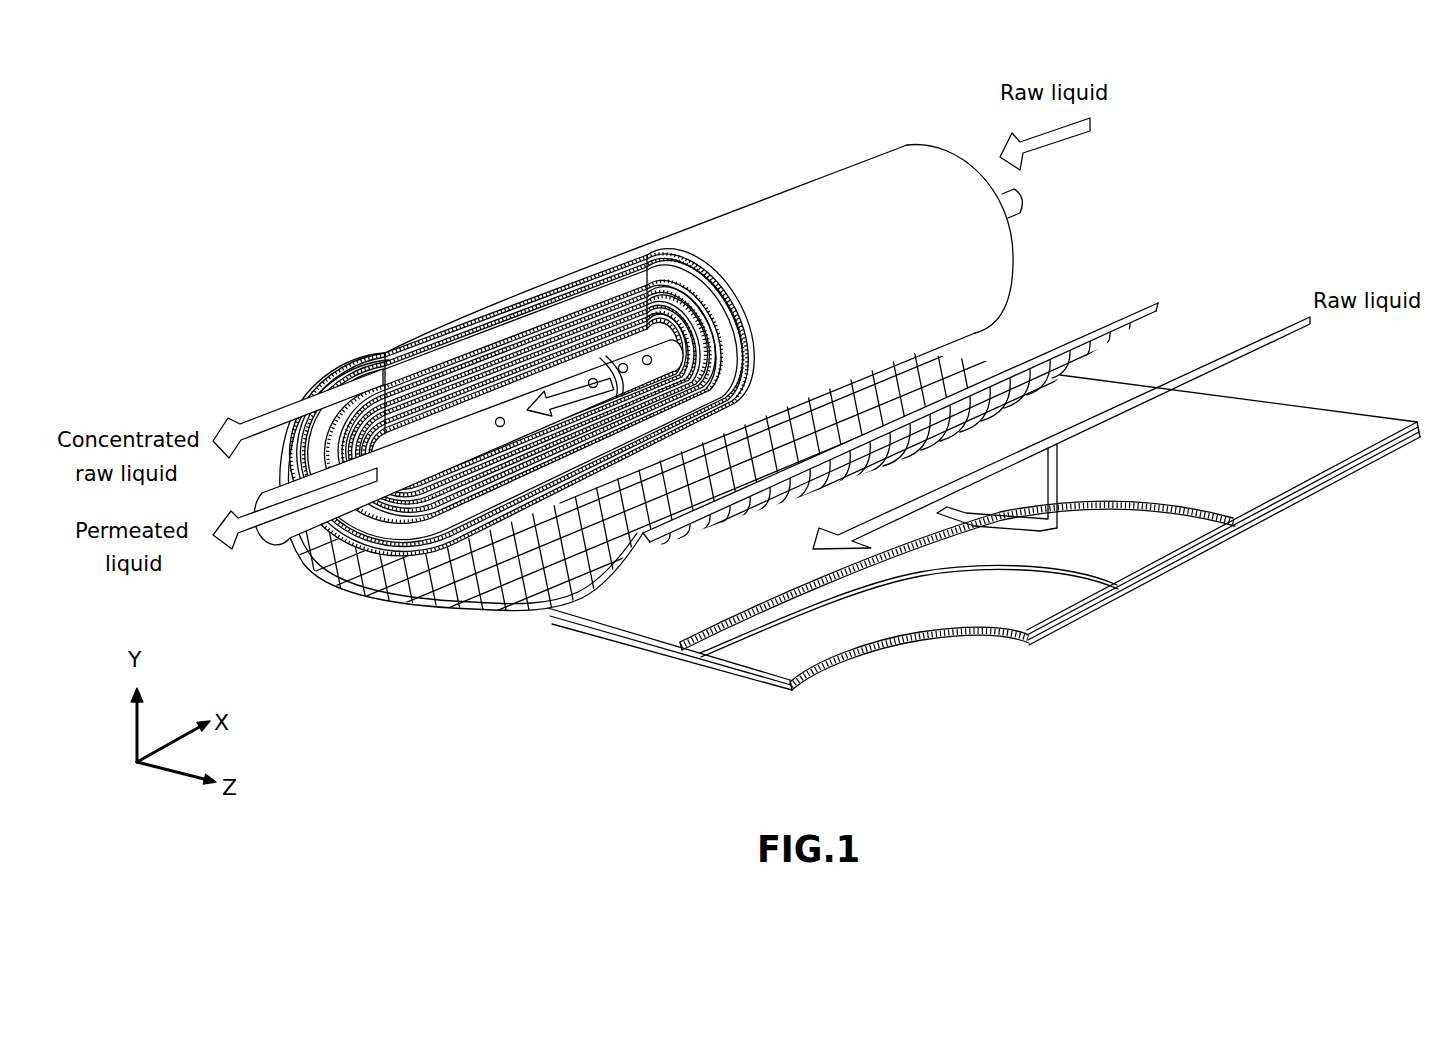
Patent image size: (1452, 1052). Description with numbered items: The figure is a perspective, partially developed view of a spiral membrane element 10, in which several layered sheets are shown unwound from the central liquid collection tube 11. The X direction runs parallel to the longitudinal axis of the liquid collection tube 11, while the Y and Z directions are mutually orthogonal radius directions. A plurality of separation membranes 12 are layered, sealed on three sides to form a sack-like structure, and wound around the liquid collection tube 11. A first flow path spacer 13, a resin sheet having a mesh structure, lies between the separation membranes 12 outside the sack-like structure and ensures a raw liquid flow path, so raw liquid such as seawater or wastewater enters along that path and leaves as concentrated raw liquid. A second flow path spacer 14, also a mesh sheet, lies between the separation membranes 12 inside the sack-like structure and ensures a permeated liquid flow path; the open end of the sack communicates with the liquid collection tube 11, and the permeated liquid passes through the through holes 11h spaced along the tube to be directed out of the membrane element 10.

The spiral membrane element 10 is at (842, 86).
The liquid collection tube 11 is at (271, 545).
The through holes 11h is at (621, 363).
The separation membranes 12 is at (734, 575).
The first flow path spacer 13 is at (1131, 305).
The second flow path spacer 14 is at (1122, 544).